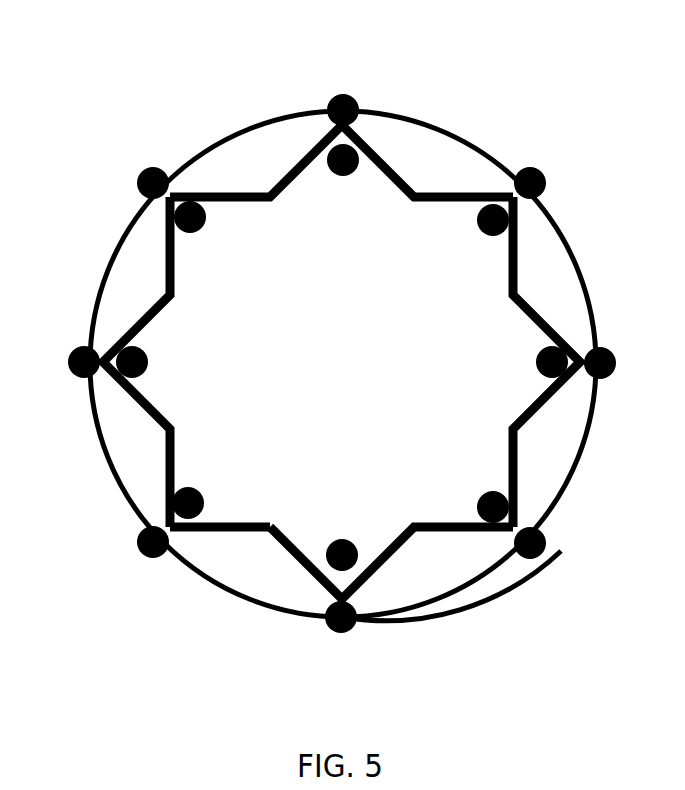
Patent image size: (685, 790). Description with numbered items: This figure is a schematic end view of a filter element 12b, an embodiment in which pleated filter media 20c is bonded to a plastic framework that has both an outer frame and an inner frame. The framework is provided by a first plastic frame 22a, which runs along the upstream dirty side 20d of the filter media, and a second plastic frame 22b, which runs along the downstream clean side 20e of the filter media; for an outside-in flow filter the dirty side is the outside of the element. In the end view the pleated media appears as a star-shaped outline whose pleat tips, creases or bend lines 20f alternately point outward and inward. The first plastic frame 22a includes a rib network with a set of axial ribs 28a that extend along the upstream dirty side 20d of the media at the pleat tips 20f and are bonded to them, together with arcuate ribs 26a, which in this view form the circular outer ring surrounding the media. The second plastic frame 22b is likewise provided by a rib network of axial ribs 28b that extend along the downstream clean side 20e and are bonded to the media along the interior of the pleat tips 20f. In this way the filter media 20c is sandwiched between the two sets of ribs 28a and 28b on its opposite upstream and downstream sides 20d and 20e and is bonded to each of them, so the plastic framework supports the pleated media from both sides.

The filter element 12b is at (222, 118).
The pleated filter media 20c is at (168, 259).
The upstream dirty side 20d is at (199, 532).
The downstream clean side 20e is at (262, 523).
The pleat tips 20f is at (511, 194).
The first plastic frame 22a is at (360, 95).
The second plastic frame 22b is at (208, 240).
The arcuate ribs 26a is at (467, 592).
The axial ribs 28a is at (612, 356).
The axial ribs 28b is at (478, 228).